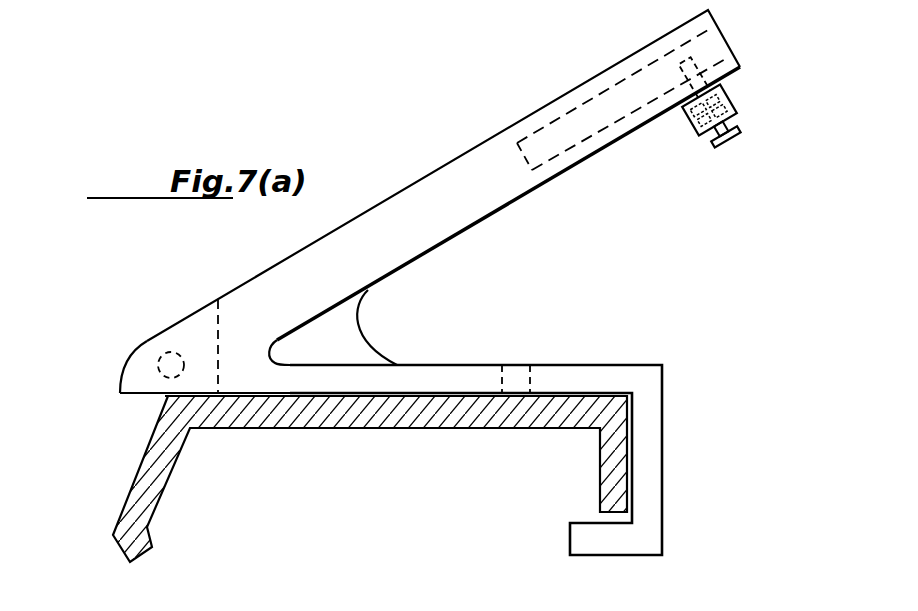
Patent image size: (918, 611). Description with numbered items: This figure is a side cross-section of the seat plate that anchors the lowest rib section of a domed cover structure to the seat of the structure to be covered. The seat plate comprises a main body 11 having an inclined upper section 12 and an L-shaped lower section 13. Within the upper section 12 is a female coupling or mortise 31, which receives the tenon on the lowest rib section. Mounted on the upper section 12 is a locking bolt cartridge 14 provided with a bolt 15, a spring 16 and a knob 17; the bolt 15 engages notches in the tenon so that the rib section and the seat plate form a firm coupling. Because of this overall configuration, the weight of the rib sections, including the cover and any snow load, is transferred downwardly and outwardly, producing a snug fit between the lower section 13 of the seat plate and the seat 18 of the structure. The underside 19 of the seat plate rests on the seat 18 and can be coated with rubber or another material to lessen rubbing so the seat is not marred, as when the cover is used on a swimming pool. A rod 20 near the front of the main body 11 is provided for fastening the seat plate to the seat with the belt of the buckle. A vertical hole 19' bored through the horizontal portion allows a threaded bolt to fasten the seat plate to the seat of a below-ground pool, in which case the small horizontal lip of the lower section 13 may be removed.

The main body 11 is at (302, 249).
The upper section 12 is at (470, 175).
The L-shaped lower section 13 is at (653, 473).
The locking bolt cartridge 14 is at (737, 108).
The bolt 15 is at (690, 60).
The spring 16 is at (728, 97).
The knob 17 is at (723, 165).
The seat 18 is at (372, 440).
The underside 19 is at (374, 479).
The vertical hole 19' is at (543, 353).
The rod 20 is at (157, 362).
The female coupling or mortise 31 is at (723, 47).